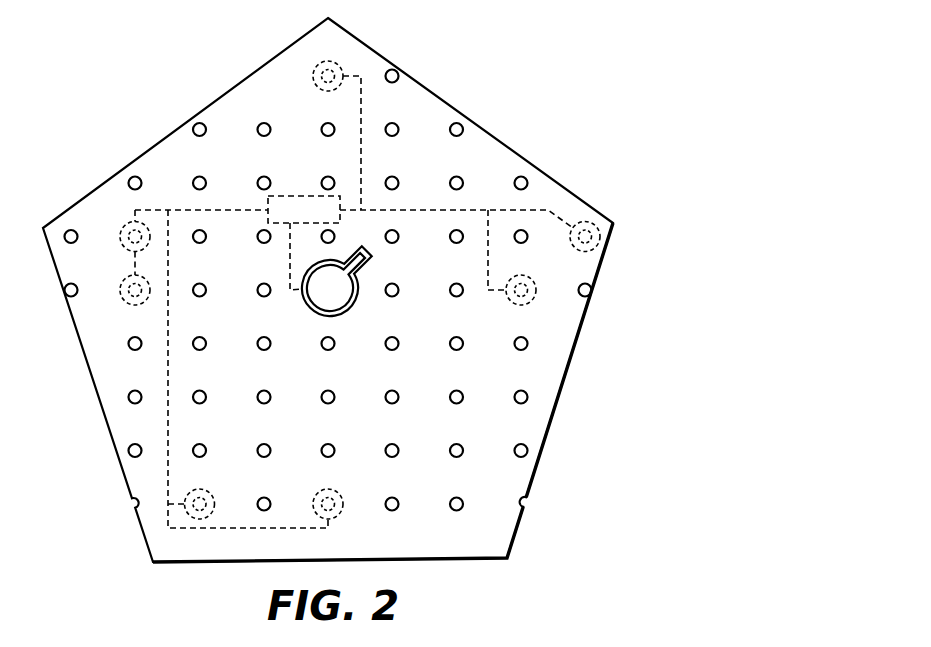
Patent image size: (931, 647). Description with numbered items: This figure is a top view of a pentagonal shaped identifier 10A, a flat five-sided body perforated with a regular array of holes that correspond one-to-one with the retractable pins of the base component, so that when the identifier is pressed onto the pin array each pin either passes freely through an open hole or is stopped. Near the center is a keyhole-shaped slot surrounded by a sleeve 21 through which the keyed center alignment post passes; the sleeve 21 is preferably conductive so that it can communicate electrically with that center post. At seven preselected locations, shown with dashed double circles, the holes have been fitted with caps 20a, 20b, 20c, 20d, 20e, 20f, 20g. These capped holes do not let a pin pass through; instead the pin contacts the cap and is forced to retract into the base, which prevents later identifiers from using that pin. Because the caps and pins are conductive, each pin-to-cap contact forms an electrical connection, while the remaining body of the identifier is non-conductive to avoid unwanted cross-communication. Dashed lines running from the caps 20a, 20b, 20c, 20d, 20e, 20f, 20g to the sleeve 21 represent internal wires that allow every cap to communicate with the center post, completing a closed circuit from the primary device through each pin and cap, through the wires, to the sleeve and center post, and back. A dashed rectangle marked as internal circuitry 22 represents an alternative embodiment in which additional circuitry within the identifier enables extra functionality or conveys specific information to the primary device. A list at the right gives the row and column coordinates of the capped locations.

The pentagonal shaped identifier 10A is at (497, 140).
The cap 20a is at (594, 223).
The cap 20b is at (524, 304).
The cap 20c is at (341, 500).
The cap 20d is at (184, 504).
The cap 20e is at (127, 302).
The cap 20f is at (124, 226).
The cap 20g is at (336, 62).
The sleeve 21 is at (351, 309).
The internal circuitry 22 is at (300, 196).